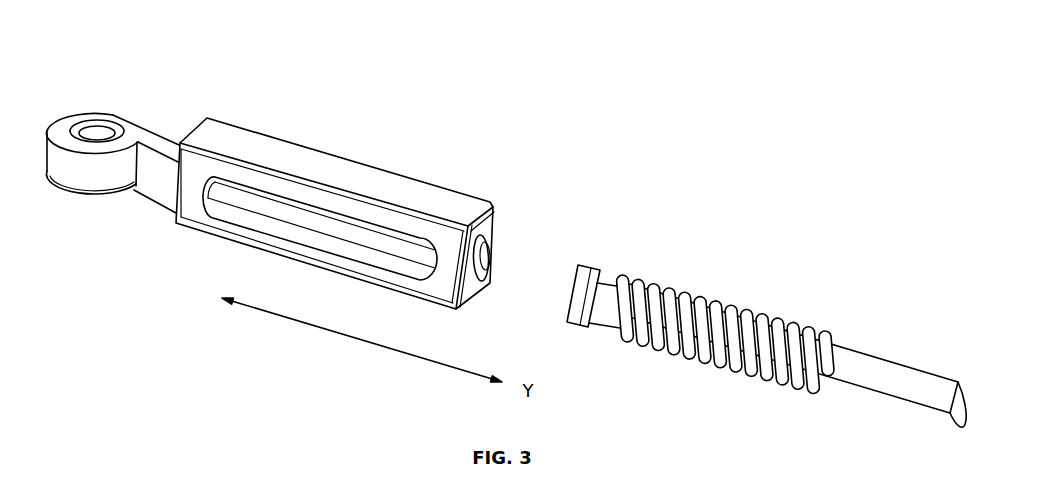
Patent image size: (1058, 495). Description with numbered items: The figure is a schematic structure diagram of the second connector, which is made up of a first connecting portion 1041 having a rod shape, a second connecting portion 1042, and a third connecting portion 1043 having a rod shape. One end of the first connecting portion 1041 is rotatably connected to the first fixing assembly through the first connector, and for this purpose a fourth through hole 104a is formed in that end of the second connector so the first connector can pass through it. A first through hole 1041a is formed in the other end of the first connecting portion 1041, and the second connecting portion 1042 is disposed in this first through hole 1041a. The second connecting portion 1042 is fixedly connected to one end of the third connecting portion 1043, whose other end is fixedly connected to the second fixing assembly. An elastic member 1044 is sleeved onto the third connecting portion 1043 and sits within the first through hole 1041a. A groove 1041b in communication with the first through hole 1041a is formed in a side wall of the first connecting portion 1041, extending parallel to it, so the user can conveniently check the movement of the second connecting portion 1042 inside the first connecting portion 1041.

The fourth through hole 104a is at (100, 122).
The first connecting portion 1041 is at (248, 137).
The groove 1041b is at (360, 224).
The first through hole 1041a is at (489, 240).
The second connecting portion 1042 is at (590, 252).
The third connecting portion 1043 is at (896, 349).
The elastic member 1044 is at (709, 282).